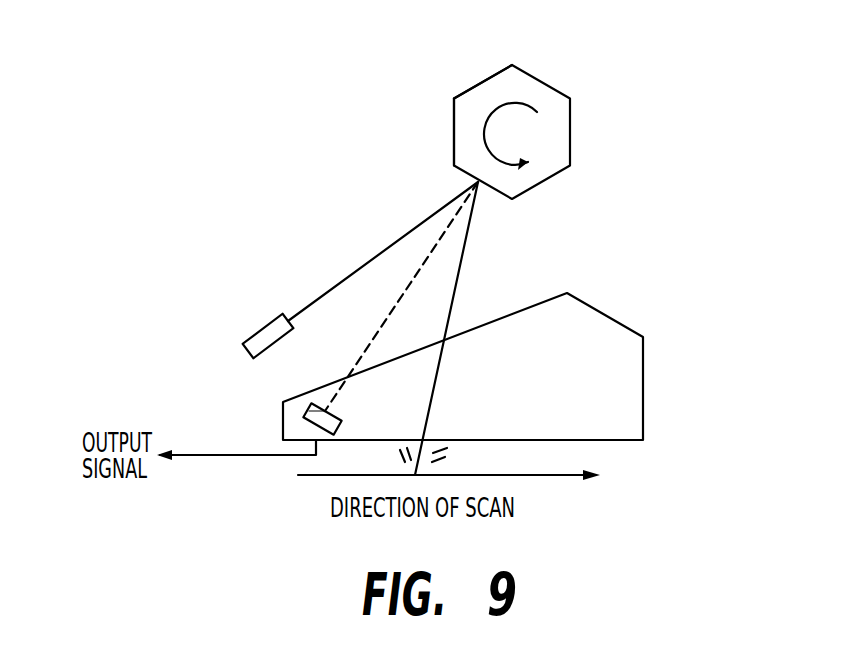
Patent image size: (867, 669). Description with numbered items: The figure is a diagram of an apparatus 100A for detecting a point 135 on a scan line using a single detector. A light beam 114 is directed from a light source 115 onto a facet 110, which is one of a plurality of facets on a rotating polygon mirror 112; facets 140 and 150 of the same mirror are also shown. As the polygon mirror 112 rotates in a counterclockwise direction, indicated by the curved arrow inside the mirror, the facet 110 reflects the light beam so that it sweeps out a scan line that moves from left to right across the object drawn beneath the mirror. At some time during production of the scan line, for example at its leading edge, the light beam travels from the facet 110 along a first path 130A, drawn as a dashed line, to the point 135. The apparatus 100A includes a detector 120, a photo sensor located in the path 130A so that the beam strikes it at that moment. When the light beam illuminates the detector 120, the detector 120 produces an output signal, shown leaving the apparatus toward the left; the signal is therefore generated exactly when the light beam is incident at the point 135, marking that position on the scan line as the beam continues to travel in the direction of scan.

The apparatus 100A is at (611, 306).
The facet 110 is at (463, 172).
The rotating polygon mirror 112 is at (547, 107).
The light beam 114 is at (352, 275).
The laser source 115 is at (263, 337).
The detector 120 is at (290, 409).
The first path 130A is at (410, 292).
The point 135 is at (328, 408).
The facet 140 is at (452, 122).
The facet 150 is at (483, 78).